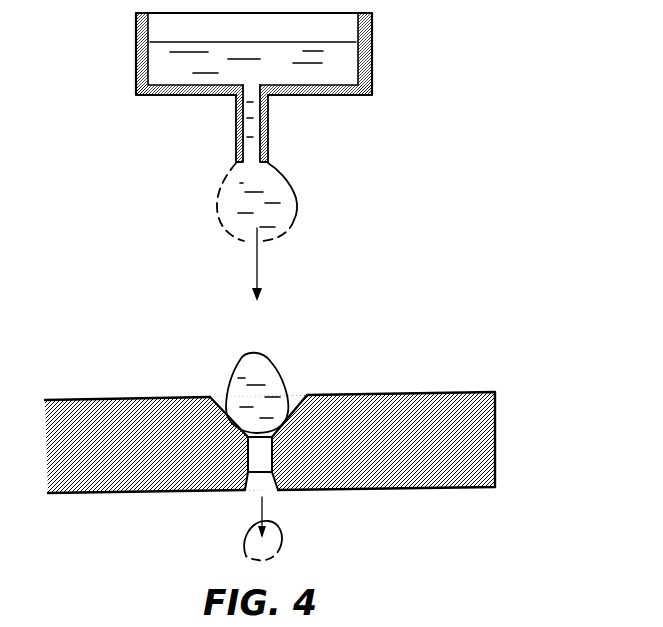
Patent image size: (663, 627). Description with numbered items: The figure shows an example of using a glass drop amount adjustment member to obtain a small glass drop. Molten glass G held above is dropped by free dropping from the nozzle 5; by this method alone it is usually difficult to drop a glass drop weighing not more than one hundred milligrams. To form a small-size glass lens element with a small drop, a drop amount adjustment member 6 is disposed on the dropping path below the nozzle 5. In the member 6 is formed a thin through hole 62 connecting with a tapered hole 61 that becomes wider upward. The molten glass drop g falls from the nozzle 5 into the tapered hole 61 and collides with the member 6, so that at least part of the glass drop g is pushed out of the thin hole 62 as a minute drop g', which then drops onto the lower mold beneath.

The molten glass in reservoir G is at (340, 68).
The nozzle 5 is at (268, 119).
The glass drop g is at (297, 298).
The tapered hole 61 is at (222, 398).
The drop amount adjustment member 6 is at (495, 435).
The thin through hole 62 is at (258, 457).
The minute drop g' is at (309, 528).